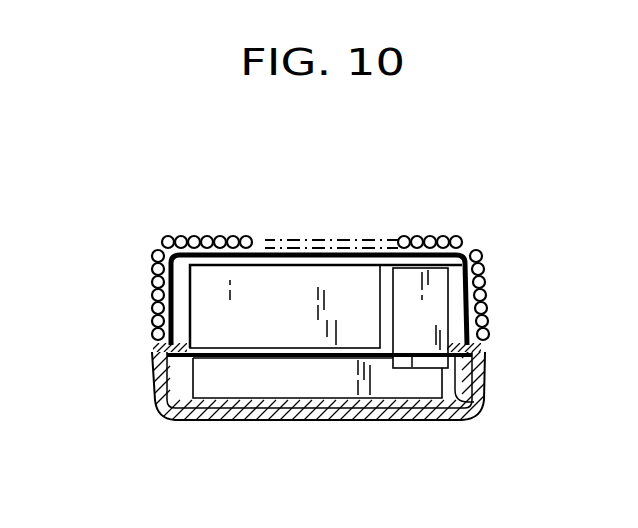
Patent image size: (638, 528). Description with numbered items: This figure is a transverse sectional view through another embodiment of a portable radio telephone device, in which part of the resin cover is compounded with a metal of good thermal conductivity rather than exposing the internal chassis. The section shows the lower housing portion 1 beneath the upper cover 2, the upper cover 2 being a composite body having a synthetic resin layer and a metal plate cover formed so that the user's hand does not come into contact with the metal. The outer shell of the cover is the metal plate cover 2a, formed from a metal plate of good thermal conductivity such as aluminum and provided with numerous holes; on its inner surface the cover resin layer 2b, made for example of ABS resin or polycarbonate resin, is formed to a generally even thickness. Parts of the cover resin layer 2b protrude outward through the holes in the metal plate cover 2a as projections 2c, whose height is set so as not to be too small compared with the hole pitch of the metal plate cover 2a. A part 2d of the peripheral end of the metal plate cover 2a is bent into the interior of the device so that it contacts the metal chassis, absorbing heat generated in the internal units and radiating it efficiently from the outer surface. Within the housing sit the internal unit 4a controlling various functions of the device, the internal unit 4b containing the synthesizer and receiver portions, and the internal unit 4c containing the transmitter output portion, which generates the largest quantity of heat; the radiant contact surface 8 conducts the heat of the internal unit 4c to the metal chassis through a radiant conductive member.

The container body 1 is at (219, 420).
The upper cover 2 is at (155, 305).
The metal plate cover 2a is at (173, 247).
The cover resin layer 2b is at (210, 278).
The projection 2c is at (205, 240).
The bent peripheral end part of metal plate cover 2d is at (487, 331).
The internal unit 4a is at (398, 385).
The internal unit 4b is at (336, 290).
The internal unit 4c is at (438, 272).
The radiant contact surface 8 is at (478, 402).